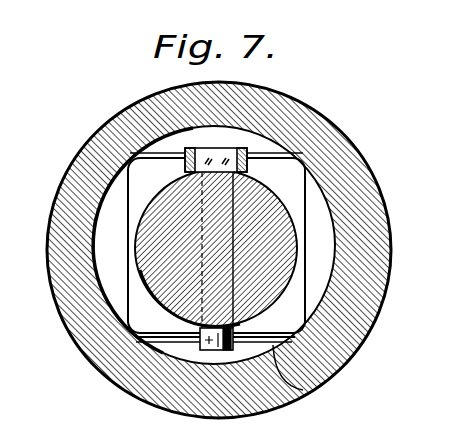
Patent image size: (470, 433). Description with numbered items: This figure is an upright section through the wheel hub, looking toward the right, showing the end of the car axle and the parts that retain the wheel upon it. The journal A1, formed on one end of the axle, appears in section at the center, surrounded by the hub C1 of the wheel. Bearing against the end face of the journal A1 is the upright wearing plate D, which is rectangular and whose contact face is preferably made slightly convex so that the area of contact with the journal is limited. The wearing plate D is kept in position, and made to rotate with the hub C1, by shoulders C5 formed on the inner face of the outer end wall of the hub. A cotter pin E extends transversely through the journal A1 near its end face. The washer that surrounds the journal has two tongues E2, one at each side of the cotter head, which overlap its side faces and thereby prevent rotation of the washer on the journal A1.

The hub C1 is at (348, 344).
The shoulders C5 is at (305, 390).
The wearing plate D is at (298, 294).
The journal A1 is at (272, 260).
The tongues E2 is at (185, 150).
The cotter pin E is at (203, 342).